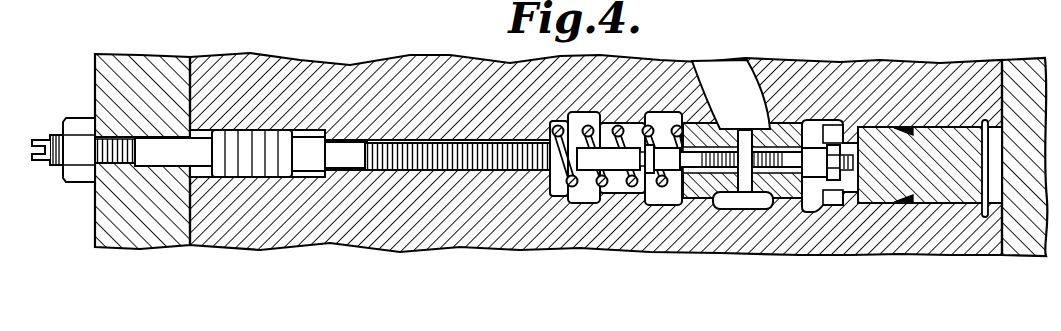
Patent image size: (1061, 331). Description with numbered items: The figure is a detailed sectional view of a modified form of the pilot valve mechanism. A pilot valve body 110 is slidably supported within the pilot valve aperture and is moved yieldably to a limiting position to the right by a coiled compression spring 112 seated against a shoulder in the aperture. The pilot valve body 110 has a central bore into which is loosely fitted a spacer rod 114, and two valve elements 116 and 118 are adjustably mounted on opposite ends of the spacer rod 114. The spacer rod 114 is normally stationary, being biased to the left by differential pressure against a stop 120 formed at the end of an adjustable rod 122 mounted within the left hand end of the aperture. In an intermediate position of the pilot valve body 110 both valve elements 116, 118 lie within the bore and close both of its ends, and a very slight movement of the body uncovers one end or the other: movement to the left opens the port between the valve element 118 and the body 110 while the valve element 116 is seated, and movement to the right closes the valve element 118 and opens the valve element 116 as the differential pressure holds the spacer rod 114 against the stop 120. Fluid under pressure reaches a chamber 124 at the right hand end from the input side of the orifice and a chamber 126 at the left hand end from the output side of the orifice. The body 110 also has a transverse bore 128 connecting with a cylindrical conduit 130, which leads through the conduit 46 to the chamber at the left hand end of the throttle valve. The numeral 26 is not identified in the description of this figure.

The spring housing 26 is at (573, 115).
The conduit 46 is at (722, 68).
The pilot valve body 110 is at (825, 121).
The coiled compression spring 112 is at (597, 128).
The spacer rod 114 is at (778, 150).
The valve element 116 is at (667, 190).
The valve element 118 is at (823, 170).
The stop 120 is at (618, 160).
The adjustable rod 122 is at (338, 160).
The chamber 124 is at (836, 108).
The chamber 126 is at (615, 130).
The transverse bore 128 is at (744, 185).
The cylindrical conduit 130 is at (760, 202).